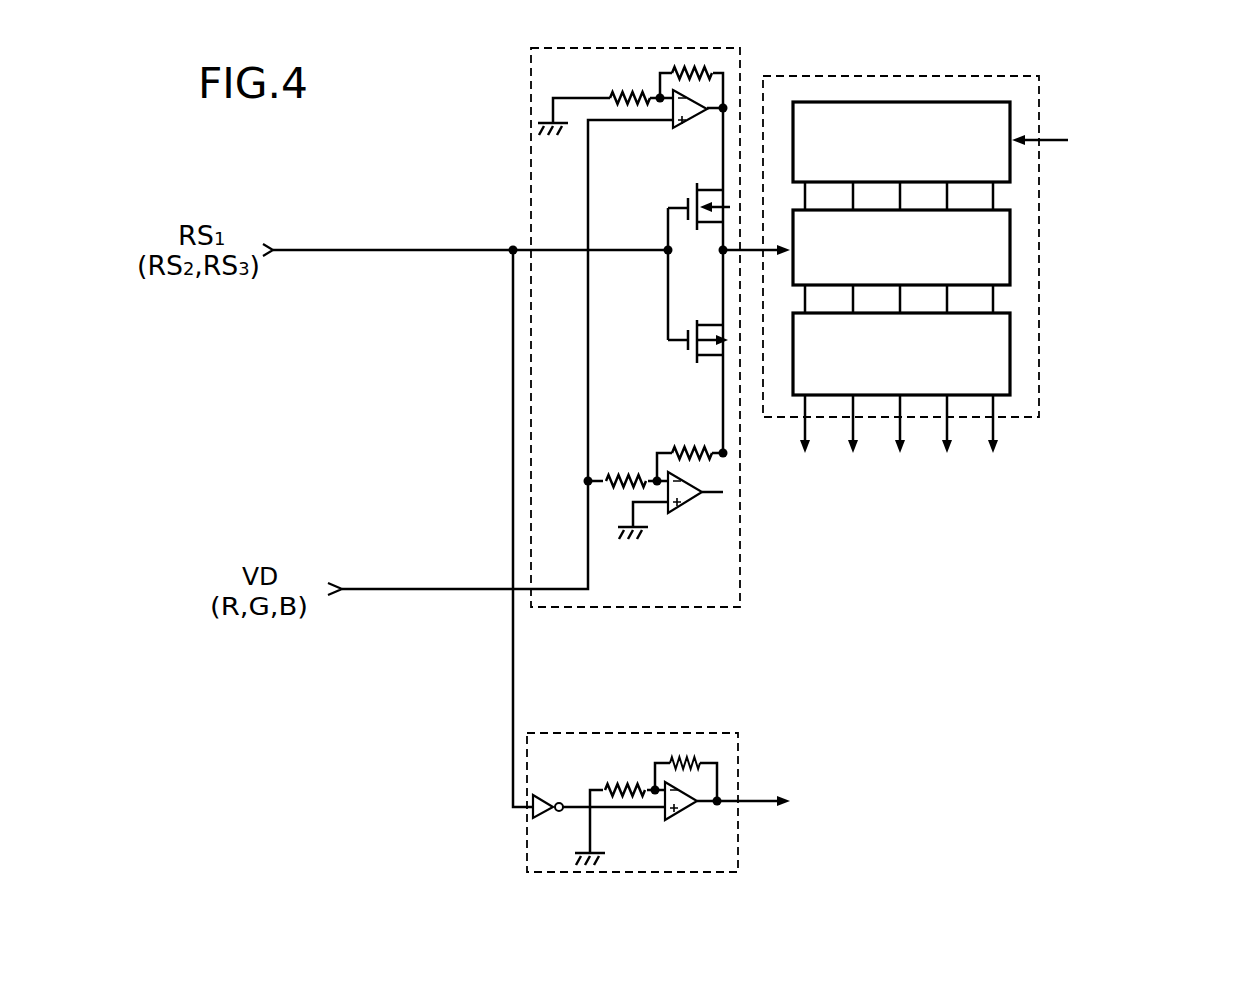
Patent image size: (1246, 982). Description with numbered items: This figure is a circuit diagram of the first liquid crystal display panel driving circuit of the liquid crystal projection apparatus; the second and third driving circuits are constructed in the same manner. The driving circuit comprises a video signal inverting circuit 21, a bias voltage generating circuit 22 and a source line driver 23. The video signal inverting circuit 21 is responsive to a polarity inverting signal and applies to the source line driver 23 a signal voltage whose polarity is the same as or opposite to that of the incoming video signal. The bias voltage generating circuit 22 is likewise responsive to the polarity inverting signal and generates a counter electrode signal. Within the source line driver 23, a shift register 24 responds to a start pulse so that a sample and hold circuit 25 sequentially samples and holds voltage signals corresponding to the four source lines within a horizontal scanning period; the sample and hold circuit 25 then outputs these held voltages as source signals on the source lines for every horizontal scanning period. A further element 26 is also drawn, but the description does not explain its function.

The video signal inverting circuit 21 is at (741, 56).
The bias voltage generating circuit 22 is at (740, 830).
The source line driver 23 is at (1040, 285).
The shift register 24 is at (1012, 118).
The sample and hold circuit 25 is at (1012, 233).
The output buffer 26 is at (1012, 343).